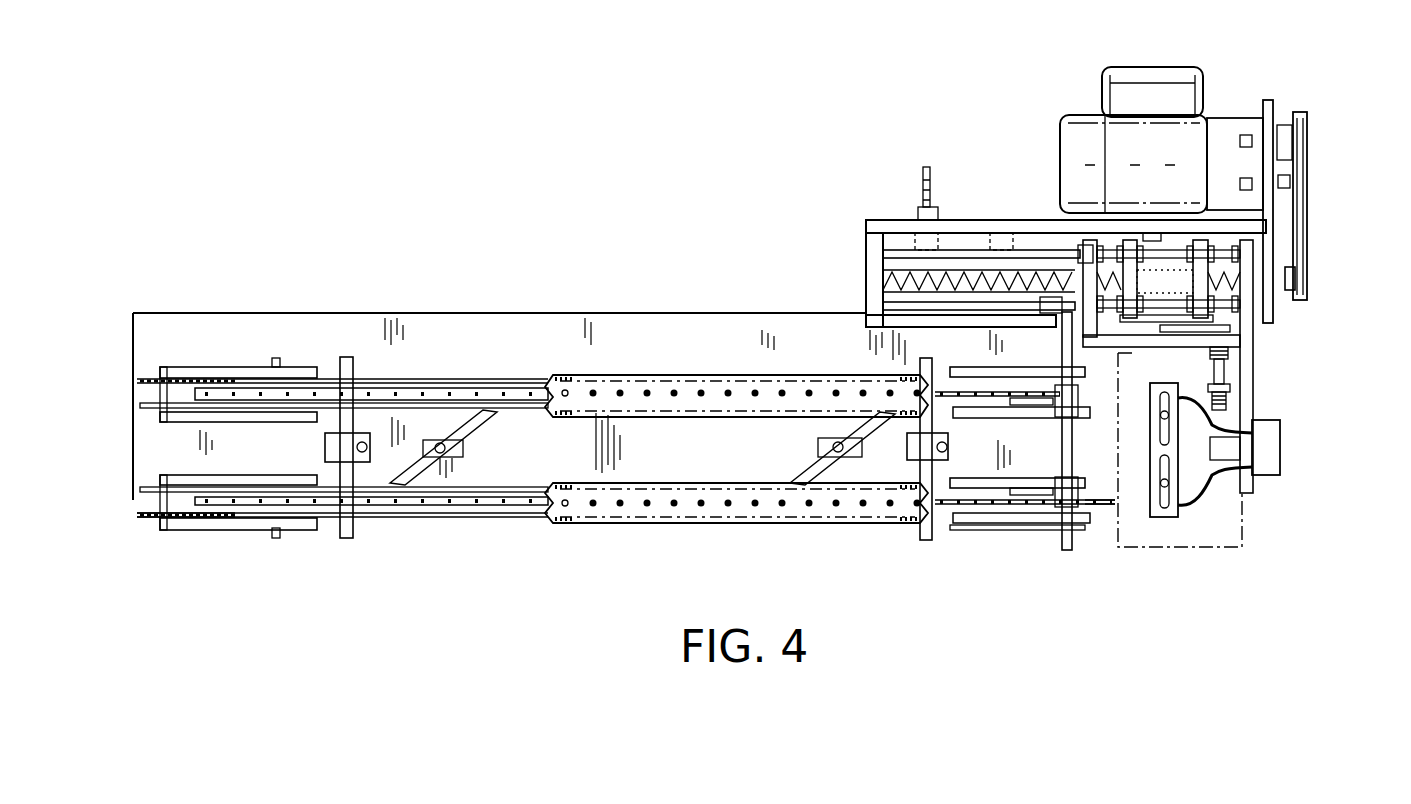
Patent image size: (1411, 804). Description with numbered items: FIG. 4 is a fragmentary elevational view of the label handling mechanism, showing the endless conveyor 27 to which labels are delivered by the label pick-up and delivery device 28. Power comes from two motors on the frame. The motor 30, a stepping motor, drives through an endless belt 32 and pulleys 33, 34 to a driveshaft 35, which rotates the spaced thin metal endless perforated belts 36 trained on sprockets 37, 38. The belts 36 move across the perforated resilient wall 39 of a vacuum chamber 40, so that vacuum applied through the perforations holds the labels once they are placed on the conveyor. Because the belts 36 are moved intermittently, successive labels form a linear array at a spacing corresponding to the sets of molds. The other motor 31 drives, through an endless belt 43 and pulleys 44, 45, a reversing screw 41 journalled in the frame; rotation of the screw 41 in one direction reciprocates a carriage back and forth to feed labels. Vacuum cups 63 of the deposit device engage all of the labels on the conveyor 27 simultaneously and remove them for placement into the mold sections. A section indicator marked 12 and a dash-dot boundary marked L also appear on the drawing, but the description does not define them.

The section line 12 is at (265, 353).
The endless conveyor 27 is at (751, 536).
The label pick-up and delivery device 28 is at (1173, 517).
The motor 30 is at (1140, 78).
The motor 31 is at (1068, 147).
The endless belt 32 is at (1060, 243).
The pulley 33 is at (1160, 238).
The pulley 34 is at (1025, 248).
The driveshaft 35 is at (1088, 437).
The endless perforated belts 36 is at (700, 410).
The sprocket 37 is at (1103, 520).
The sprocket 38 is at (143, 520).
The perforated resilient wall 39 is at (425, 390).
The vacuum chamber 40 is at (947, 395).
The reversing screw 41 is at (940, 287).
The endless belt 43 is at (1298, 115).
The pulley 44 is at (1308, 155).
The pulley 45 is at (1308, 290).
The vacuum cups 63 is at (1150, 445).
The position L is at (1185, 553).